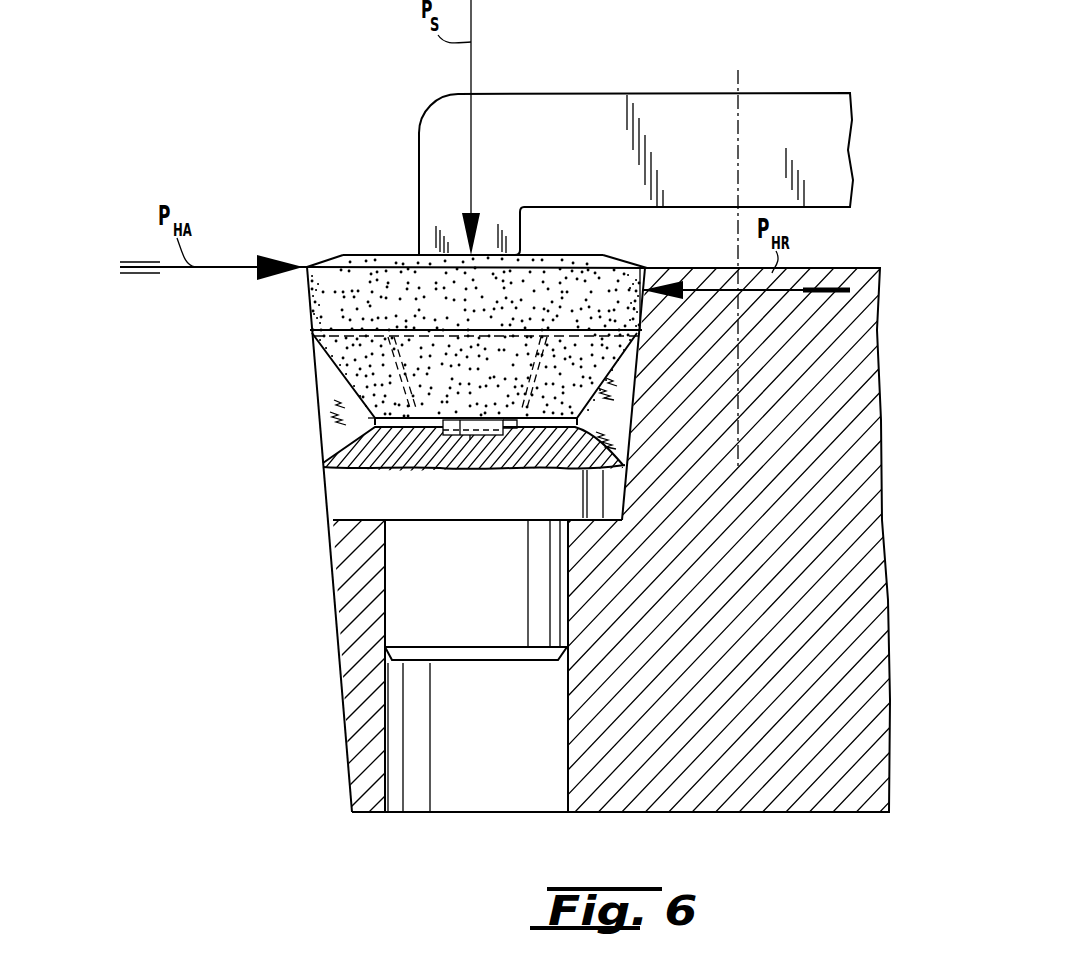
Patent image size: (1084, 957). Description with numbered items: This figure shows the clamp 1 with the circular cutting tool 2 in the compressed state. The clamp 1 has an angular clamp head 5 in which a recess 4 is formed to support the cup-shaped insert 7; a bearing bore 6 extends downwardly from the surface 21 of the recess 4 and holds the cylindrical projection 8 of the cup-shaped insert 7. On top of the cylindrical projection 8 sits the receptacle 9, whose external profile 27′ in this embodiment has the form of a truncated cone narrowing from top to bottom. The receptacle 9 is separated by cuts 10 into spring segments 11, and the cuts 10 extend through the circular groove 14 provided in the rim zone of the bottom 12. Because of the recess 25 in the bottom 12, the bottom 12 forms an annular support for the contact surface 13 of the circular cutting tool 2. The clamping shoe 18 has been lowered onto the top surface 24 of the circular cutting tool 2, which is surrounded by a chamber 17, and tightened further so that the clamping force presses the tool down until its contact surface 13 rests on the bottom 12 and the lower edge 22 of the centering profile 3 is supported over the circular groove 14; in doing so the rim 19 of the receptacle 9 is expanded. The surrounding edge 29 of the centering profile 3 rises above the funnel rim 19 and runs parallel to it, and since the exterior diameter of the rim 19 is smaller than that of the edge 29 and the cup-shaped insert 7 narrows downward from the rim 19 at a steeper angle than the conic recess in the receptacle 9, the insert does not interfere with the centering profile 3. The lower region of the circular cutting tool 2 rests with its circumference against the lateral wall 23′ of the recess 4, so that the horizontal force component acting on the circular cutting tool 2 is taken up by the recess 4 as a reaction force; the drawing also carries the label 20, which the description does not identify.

The clamp 1 is at (872, 247).
The circular cutting tool 2 is at (296, 295).
The centering profile 3 is at (612, 373).
The recess 4 is at (641, 268).
The angular clamp head 5 is at (355, 747).
The bearing bore 6 is at (493, 795).
The cup-shaped insert 7 is at (317, 466).
The cylindrical projection 8 is at (486, 597).
The receptacle 9 is at (617, 326).
The cuts 10 is at (397, 331).
The spring segments 11 is at (337, 373).
The bottom 12 is at (435, 417).
The contact surface 13 is at (517, 422).
The circular groove 14 is at (375, 426).
The chamber 17 is at (326, 258).
The clamping shoe 18 is at (432, 172).
The rim 19 is at (494, 329).
The bonding zone 20 is at (348, 388).
The surface 21 is at (352, 514).
The lower edge 22 is at (367, 416).
The lateral wall 23′ is at (618, 493).
The top surface 24 is at (388, 254).
The recess 25 is at (474, 436).
The external profile 27′ is at (323, 493).
The surrounding edge 29 is at (310, 330).